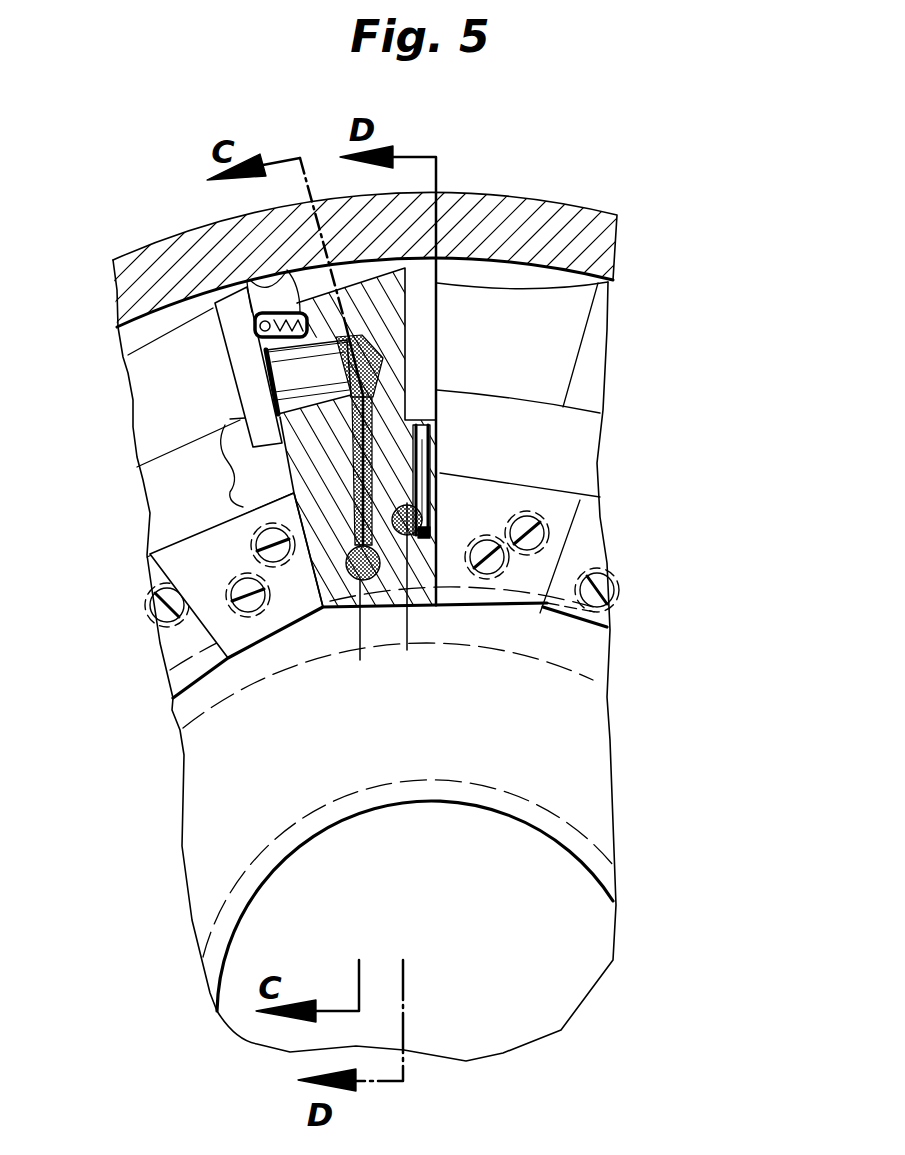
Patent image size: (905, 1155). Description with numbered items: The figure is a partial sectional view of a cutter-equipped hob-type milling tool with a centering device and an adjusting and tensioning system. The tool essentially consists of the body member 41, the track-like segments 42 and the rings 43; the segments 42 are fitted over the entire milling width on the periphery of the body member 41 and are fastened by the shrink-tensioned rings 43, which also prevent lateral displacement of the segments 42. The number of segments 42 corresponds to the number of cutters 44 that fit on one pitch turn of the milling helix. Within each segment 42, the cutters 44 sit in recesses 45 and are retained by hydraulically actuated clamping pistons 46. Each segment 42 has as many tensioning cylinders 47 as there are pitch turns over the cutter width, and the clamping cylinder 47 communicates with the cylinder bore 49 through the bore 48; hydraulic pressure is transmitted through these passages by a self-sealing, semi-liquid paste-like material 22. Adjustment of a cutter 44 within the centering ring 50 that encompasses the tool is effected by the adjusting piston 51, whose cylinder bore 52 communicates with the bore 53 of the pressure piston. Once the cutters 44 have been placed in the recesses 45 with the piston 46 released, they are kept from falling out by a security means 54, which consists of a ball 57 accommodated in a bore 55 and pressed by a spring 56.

The semi-liquid paste-like material 22 is at (378, 372).
The body member 41 is at (201, 806).
The segments 42 is at (337, 620).
The rings 43 is at (160, 497).
The cutters 44 is at (242, 367).
The recesses 45 is at (240, 403).
The clamping pistons 46 is at (292, 423).
The tensioning cylinders 47 is at (252, 466).
The bore 48 is at (357, 493).
The cylinder bore 49 is at (343, 577).
The centering ring 50 is at (555, 217).
The adjusting piston 51 is at (430, 450).
The cylinder bore 52 is at (430, 463).
The bore 53 is at (427, 530).
The security means 54 is at (257, 330).
The bore 55 is at (343, 318).
The spring 56 is at (300, 283).
The ball 57 is at (253, 296).